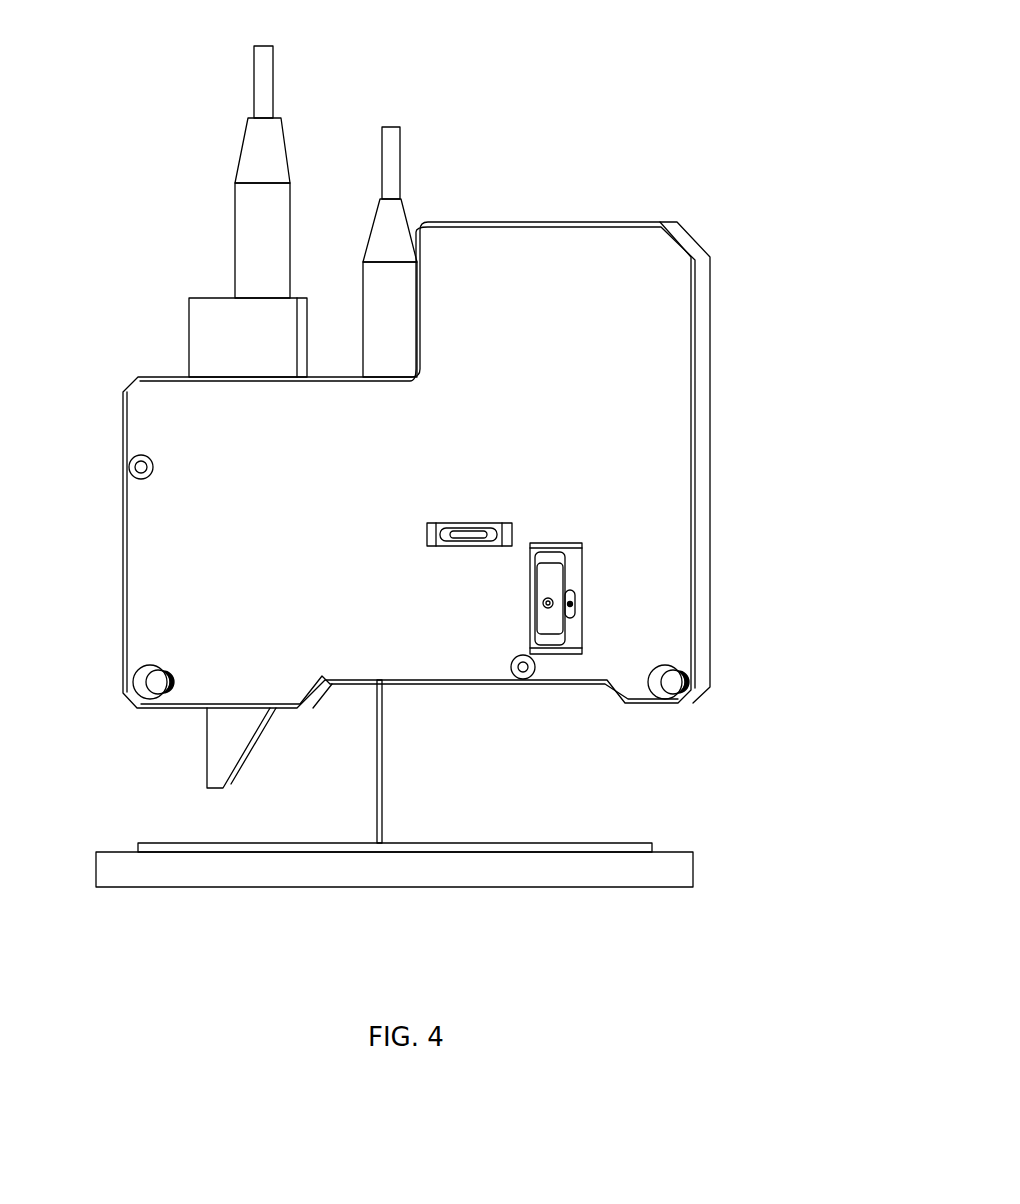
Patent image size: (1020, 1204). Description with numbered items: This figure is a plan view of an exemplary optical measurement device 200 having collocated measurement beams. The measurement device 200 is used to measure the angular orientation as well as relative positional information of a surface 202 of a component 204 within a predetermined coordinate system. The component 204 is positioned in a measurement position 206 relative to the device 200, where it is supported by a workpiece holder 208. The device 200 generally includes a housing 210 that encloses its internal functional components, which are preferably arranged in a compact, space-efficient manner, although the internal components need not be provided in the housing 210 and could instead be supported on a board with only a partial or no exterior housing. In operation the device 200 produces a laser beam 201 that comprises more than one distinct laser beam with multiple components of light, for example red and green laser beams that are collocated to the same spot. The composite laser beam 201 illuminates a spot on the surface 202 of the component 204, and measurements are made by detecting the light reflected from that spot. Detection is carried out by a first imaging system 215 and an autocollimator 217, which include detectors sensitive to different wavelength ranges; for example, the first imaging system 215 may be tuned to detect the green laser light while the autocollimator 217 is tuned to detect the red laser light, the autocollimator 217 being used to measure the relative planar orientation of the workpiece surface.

The measurement device 200 is at (602, 192).
The housing 210 is at (672, 468).
The first imaging system 215 is at (265, 245).
The autocollimator 217 is at (370, 283).
The laser beam 201 is at (383, 752).
The surface 202 is at (460, 842).
The component 204 is at (200, 847).
The measurement position 206 is at (610, 917).
The workpiece holder 208 is at (667, 865).